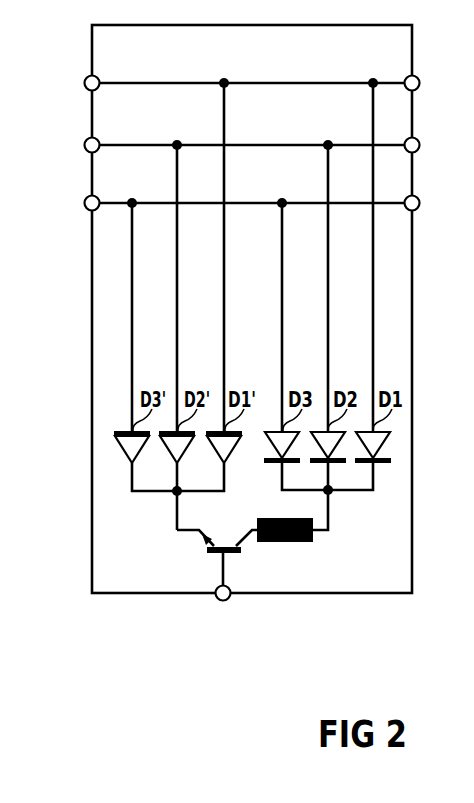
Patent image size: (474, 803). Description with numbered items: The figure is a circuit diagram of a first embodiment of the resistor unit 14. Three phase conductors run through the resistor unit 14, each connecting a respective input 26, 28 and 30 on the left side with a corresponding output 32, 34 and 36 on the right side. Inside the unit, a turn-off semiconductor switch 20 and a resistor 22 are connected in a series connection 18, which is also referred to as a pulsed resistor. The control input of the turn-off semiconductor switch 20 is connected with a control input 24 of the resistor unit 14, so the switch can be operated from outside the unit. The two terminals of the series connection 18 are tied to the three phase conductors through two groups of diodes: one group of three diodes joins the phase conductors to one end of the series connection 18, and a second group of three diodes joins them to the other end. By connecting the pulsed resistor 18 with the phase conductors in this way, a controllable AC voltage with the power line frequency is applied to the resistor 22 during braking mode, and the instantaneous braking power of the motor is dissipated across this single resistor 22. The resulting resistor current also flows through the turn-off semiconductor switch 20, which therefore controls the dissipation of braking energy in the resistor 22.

The resistor unit 14 is at (467, 371).
The series connection 18 is at (321, 543).
The turn-off semiconductor switch 20 is at (214, 554).
The resistor 22 is at (277, 543).
The control input 24 is at (223, 601).
The input 26 is at (86, 76).
The input 28 is at (86, 138).
The input 30 is at (86, 196).
The output 32 is at (419, 80).
The output 34 is at (419, 142).
The output 36 is at (419, 200).